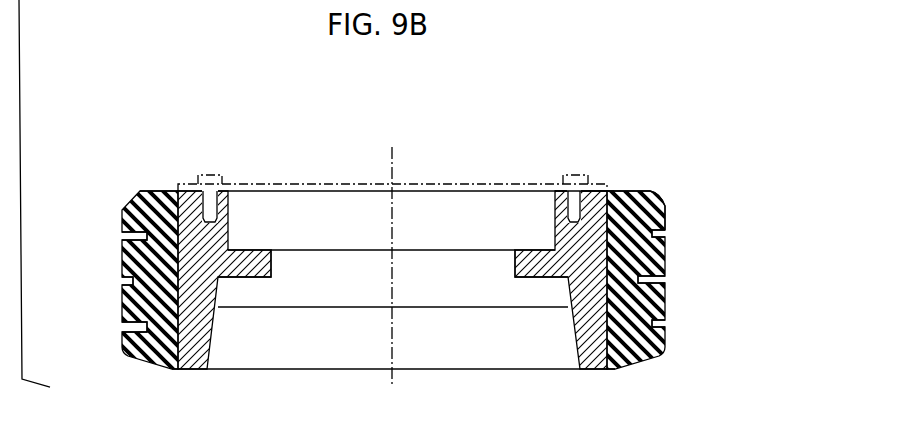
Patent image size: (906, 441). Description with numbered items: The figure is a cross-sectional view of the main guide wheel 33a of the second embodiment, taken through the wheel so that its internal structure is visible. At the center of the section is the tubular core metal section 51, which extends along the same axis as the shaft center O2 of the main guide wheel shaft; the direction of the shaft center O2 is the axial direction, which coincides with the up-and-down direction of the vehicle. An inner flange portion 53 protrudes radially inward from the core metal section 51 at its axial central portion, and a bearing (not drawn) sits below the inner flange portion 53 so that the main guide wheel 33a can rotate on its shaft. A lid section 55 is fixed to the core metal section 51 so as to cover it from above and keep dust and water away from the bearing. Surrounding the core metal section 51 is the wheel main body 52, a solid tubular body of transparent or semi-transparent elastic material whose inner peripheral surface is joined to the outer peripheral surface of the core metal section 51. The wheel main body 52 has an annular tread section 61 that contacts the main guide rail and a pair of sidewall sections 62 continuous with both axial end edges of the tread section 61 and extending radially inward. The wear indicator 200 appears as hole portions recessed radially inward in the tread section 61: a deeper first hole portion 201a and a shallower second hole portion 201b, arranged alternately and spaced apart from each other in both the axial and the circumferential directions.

The main guide wheel 33a is at (665, 108).
The wear indicator 200 is at (740, 230).
The first hole portion 201a is at (121, 235).
The second hole portion 201b is at (121, 281).
The core metal section 51 is at (653, 334).
The wheel main body 52 is at (645, 197).
The inner flange portion 53 is at (533, 263).
The lid section 55 is at (484, 185).
The tread section 61 is at (665, 225).
The sidewall section 62 is at (612, 191).
The shaft center O2 is at (394, 158).